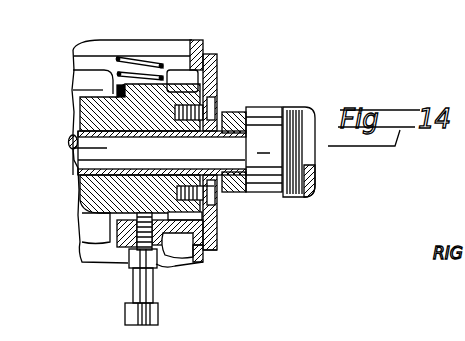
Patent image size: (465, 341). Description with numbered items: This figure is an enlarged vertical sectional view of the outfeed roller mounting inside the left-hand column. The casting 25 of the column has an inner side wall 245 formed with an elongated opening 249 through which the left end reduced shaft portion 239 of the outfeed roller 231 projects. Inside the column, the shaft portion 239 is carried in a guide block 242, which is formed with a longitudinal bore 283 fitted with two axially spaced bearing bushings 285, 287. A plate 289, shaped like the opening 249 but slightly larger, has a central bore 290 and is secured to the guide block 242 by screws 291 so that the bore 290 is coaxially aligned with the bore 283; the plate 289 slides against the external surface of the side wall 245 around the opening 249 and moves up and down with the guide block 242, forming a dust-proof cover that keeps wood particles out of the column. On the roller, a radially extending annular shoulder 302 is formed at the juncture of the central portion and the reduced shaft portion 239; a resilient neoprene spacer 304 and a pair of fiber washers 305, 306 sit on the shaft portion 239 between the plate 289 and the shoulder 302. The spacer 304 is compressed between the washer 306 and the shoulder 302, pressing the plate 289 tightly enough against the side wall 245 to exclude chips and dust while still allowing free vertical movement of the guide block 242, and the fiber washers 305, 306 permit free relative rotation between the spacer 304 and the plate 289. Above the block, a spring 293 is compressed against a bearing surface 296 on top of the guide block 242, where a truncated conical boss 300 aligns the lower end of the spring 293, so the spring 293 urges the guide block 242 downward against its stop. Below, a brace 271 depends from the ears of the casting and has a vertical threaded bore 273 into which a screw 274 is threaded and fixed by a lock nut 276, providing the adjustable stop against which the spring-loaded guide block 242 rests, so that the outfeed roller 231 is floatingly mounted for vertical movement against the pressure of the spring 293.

The casting 25 is at (135, 41).
The spring 293 is at (73, 53).
The truncated conical boss 300 is at (78, 72).
The bearing surface 296 is at (100, 90).
The elongated opening 249 is at (185, 68).
The longitudinal bore 283 is at (159, 129).
The bearing bushing 287 is at (162, 164).
The bearing bushing 285 is at (68, 139).
The reduced shaft portion 239 is at (73, 166).
The central bore 290 is at (205, 137).
The inner side wall 245 is at (205, 44).
The plate 289 is at (217, 70).
The screw 291 is at (211, 100).
The guide block 242 is at (80, 197).
The fiber washer 306 is at (212, 190).
The fiber washer 305 is at (214, 200).
The resilient spacer 304 is at (244, 112).
The annular shoulder 302 is at (262, 128).
The outfeed roller 231 is at (311, 112).
The lock nut 276 is at (171, 258).
The screw 274 is at (133, 285).
The vertical threaded bore 273 is at (129, 257).
The brace 271 is at (211, 258).